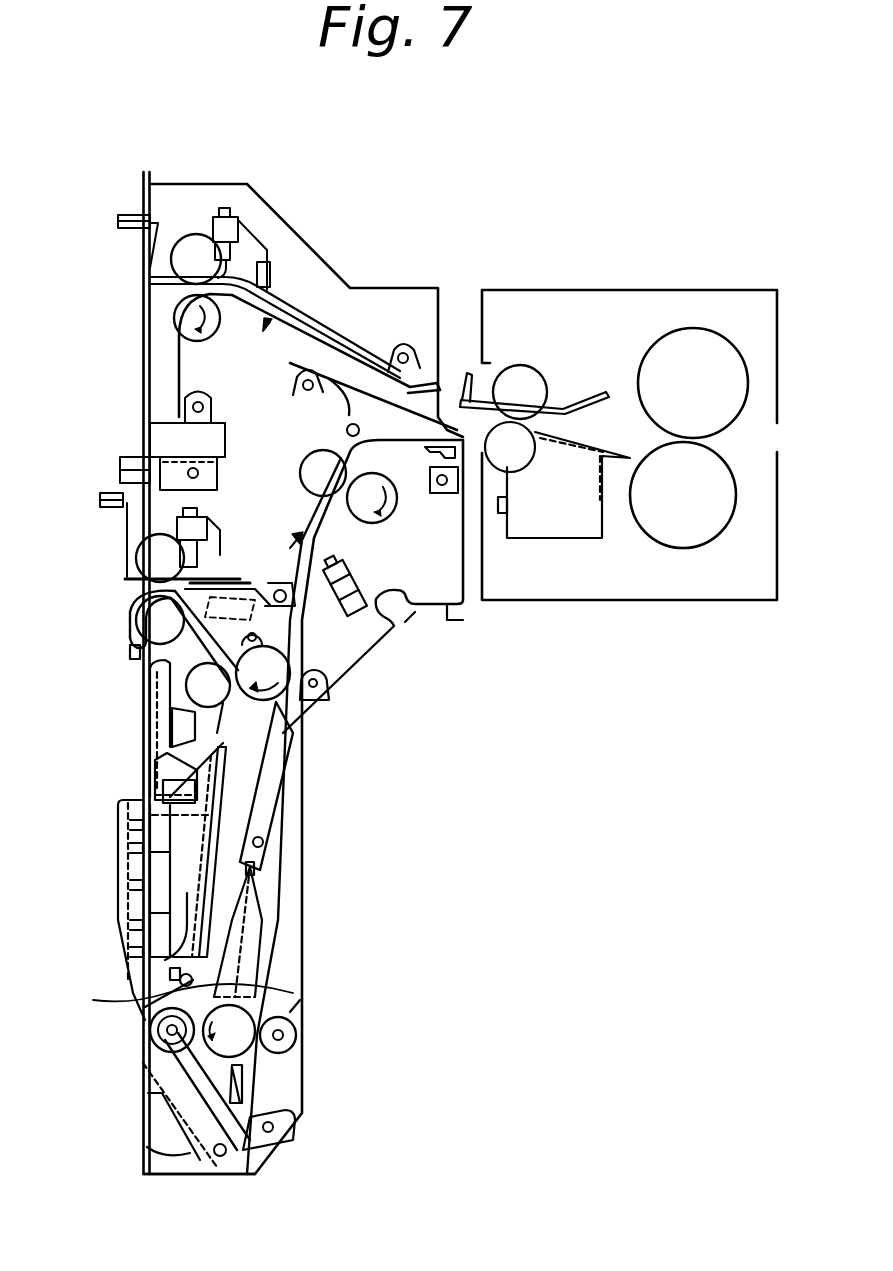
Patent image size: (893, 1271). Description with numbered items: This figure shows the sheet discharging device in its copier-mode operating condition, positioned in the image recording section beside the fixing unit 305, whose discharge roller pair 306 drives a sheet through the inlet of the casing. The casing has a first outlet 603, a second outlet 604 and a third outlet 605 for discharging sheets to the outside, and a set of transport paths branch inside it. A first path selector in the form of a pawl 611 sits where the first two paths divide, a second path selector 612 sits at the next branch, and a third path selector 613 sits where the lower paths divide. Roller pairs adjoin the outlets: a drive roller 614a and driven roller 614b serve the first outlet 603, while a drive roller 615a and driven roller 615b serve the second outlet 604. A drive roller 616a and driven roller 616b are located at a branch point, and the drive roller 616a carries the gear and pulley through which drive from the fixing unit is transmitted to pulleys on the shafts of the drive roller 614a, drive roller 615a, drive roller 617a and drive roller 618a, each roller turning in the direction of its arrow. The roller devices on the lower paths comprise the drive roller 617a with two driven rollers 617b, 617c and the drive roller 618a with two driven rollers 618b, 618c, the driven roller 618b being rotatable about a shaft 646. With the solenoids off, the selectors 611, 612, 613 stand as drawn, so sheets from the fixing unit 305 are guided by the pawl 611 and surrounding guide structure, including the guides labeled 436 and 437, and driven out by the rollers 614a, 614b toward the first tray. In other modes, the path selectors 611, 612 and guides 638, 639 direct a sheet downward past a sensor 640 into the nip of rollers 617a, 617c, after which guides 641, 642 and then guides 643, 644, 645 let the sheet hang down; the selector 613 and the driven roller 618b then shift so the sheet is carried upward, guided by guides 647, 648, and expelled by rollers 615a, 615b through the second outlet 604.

The fixing unit 305 is at (603, 290).
The discharge roller pair 306 is at (515, 363).
The bracket 436 is at (365, 348).
The guide plate 437 is at (272, 334).
The first outlet 603 is at (168, 290).
The second outlet 604 is at (137, 587).
The third outlet 605 is at (240, 1177).
The first path selector 611 is at (325, 445).
The second path selector 612 is at (293, 530).
The third path selector 613 is at (277, 837).
The drive roller 614a is at (221, 325).
The driven roller 614b is at (194, 234).
The drive roller 615a is at (133, 628).
The driven roller 615b is at (133, 553).
The drive roller 616a is at (405, 555).
The driven roller 616b is at (313, 450).
The drive roller 617a is at (283, 702).
The driven roller 617b is at (186, 685).
The driven roller 617c is at (324, 683).
The drive roller 618a is at (207, 1057).
The driven roller 618b is at (148, 1043).
The driven roller 618c is at (296, 1037).
The guide 638 is at (403, 447).
The guide 639 is at (333, 555).
The sensor 640 is at (415, 613).
The guide 641 is at (257, 907).
The guide 642 is at (228, 763).
The guide 643 is at (270, 1153).
The guide 644 is at (147, 1147).
The guide 645 is at (240, 1107).
The shaft 646 is at (165, 910).
The guide 647 is at (240, 600).
The guide 648 is at (133, 650).